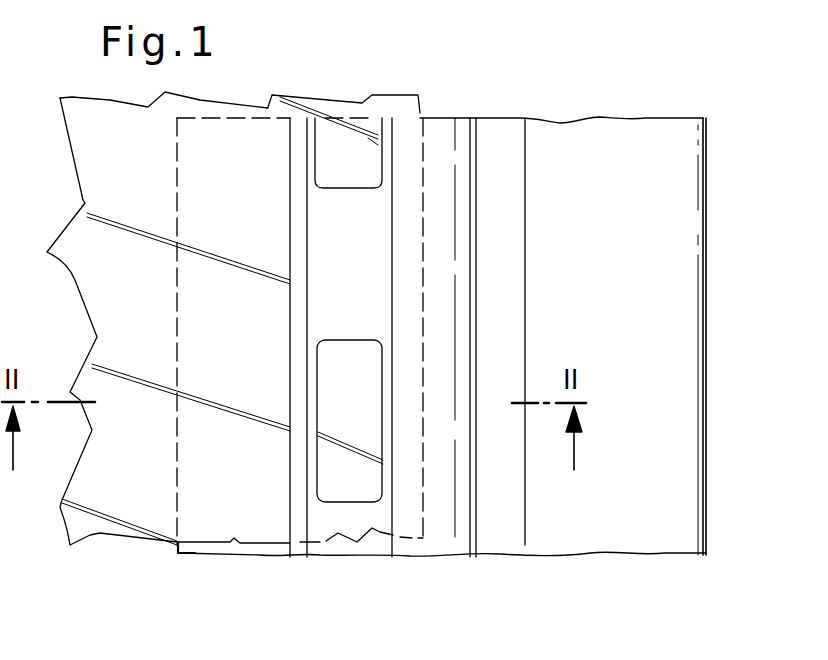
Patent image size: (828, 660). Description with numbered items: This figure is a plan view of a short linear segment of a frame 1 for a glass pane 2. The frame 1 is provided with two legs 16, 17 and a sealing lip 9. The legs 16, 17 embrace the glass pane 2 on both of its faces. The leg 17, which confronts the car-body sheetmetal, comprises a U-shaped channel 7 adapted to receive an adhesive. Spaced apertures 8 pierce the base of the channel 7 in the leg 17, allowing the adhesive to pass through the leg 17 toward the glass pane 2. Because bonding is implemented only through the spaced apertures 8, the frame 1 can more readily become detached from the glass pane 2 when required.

The frame 1 is at (642, 118).
The glass pane 2 is at (120, 510).
The U-shaped channel 7 is at (330, 240).
The spaced apertures 8 is at (316, 162).
The sealing lip 9 is at (663, 533).
The leg 16 is at (195, 553).
The leg 17 is at (438, 530).